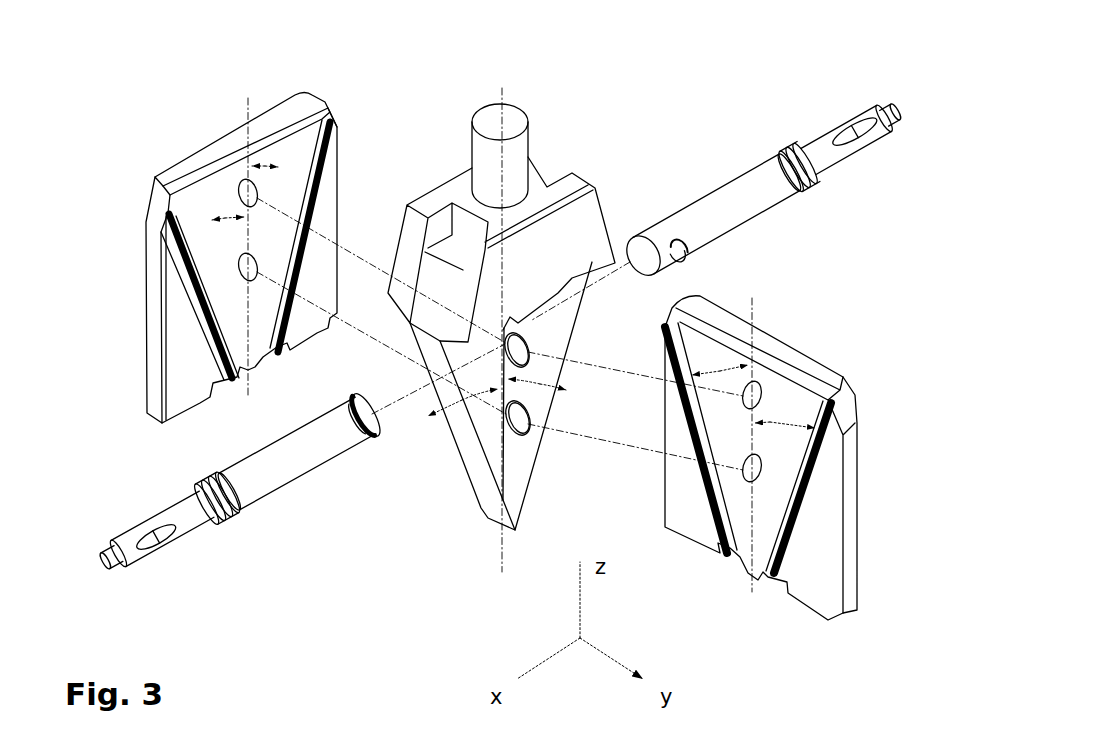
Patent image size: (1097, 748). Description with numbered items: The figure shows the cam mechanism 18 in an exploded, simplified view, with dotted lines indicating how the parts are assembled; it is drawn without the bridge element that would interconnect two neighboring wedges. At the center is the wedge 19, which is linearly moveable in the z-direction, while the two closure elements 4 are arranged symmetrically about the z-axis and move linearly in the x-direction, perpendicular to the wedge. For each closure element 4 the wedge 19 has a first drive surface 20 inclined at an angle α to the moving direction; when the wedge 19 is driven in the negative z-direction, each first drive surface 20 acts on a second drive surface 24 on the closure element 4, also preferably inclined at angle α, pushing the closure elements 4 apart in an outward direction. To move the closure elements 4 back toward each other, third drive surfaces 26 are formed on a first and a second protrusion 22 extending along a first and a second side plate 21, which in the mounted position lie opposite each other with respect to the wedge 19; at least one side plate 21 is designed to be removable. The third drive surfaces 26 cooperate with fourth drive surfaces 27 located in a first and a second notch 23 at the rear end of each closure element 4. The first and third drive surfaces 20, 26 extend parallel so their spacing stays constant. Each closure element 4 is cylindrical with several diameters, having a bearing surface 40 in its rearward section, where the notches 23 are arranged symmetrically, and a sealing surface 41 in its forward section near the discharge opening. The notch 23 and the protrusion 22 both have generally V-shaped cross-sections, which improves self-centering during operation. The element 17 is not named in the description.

The closure element 4 is at (501, 373).
The wedge holder with cylindrical shank 17 is at (546, 375).
The cam mechanism 18 is at (769, 90).
The wedge 19 is at (445, 472).
The first drive surface 20 is at (549, 465).
The side plate 21 is at (500, 374).
The protrusion 22 is at (501, 348).
The notch 23 is at (334, 390).
The second drive surface 24 is at (358, 422).
The third drive surface 26 is at (184, 291).
The fourth drive surface 27 is at (678, 268).
The bearing surface 40 is at (136, 584).
The sealing surface 41 is at (214, 462).